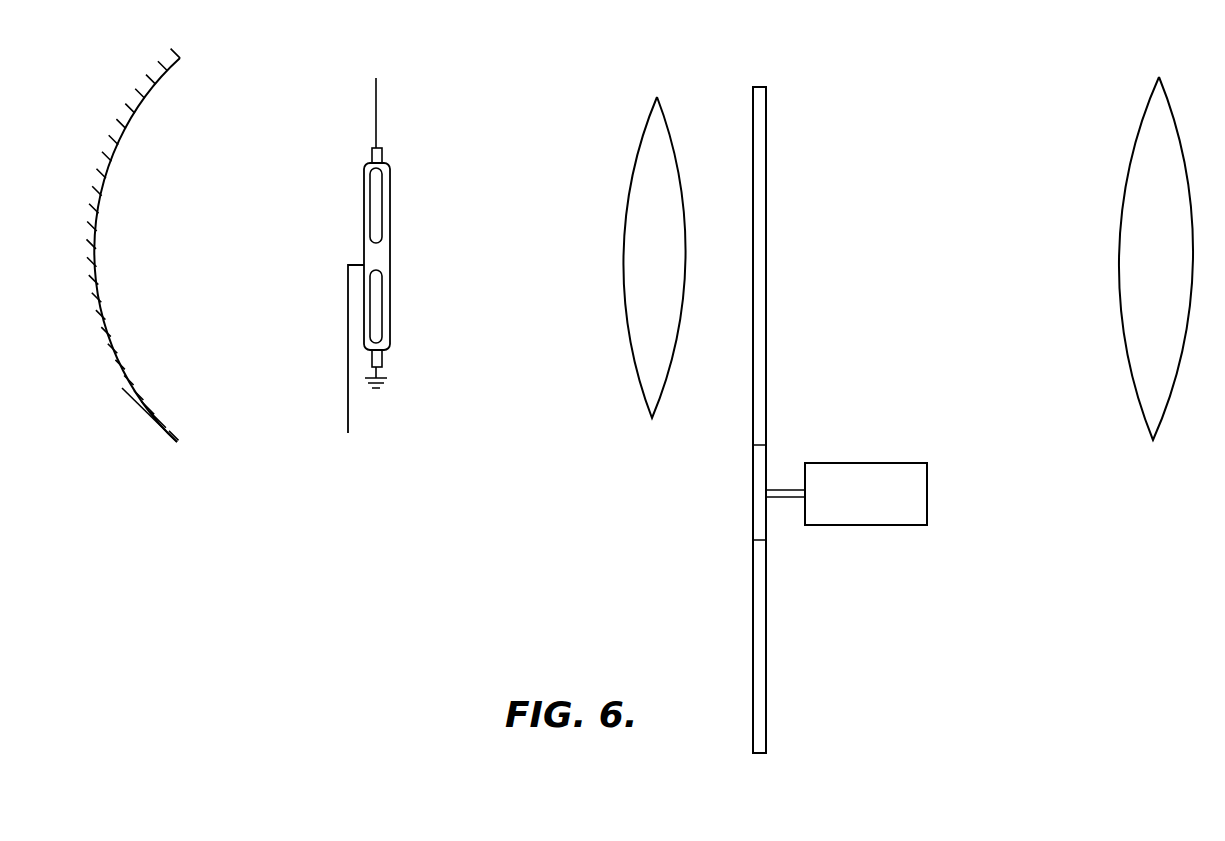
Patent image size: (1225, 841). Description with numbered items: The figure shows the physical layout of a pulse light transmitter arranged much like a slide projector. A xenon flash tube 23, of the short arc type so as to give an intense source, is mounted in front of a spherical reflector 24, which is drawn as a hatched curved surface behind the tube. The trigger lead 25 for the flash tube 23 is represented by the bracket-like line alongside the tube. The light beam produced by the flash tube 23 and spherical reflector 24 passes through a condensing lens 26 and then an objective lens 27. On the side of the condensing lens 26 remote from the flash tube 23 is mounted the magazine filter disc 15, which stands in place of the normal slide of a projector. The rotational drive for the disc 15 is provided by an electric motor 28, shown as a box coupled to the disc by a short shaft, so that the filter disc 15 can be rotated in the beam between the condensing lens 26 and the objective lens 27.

The magazine filter disc 15 is at (760, 222).
The xenon flash tube 23 is at (388, 345).
The spherical reflector 24 is at (143, 397).
The trigger lead 25 is at (348, 400).
The condensing lens 26 is at (652, 388).
The objective lens 27 is at (1158, 410).
The electric motor 28 is at (850, 515).